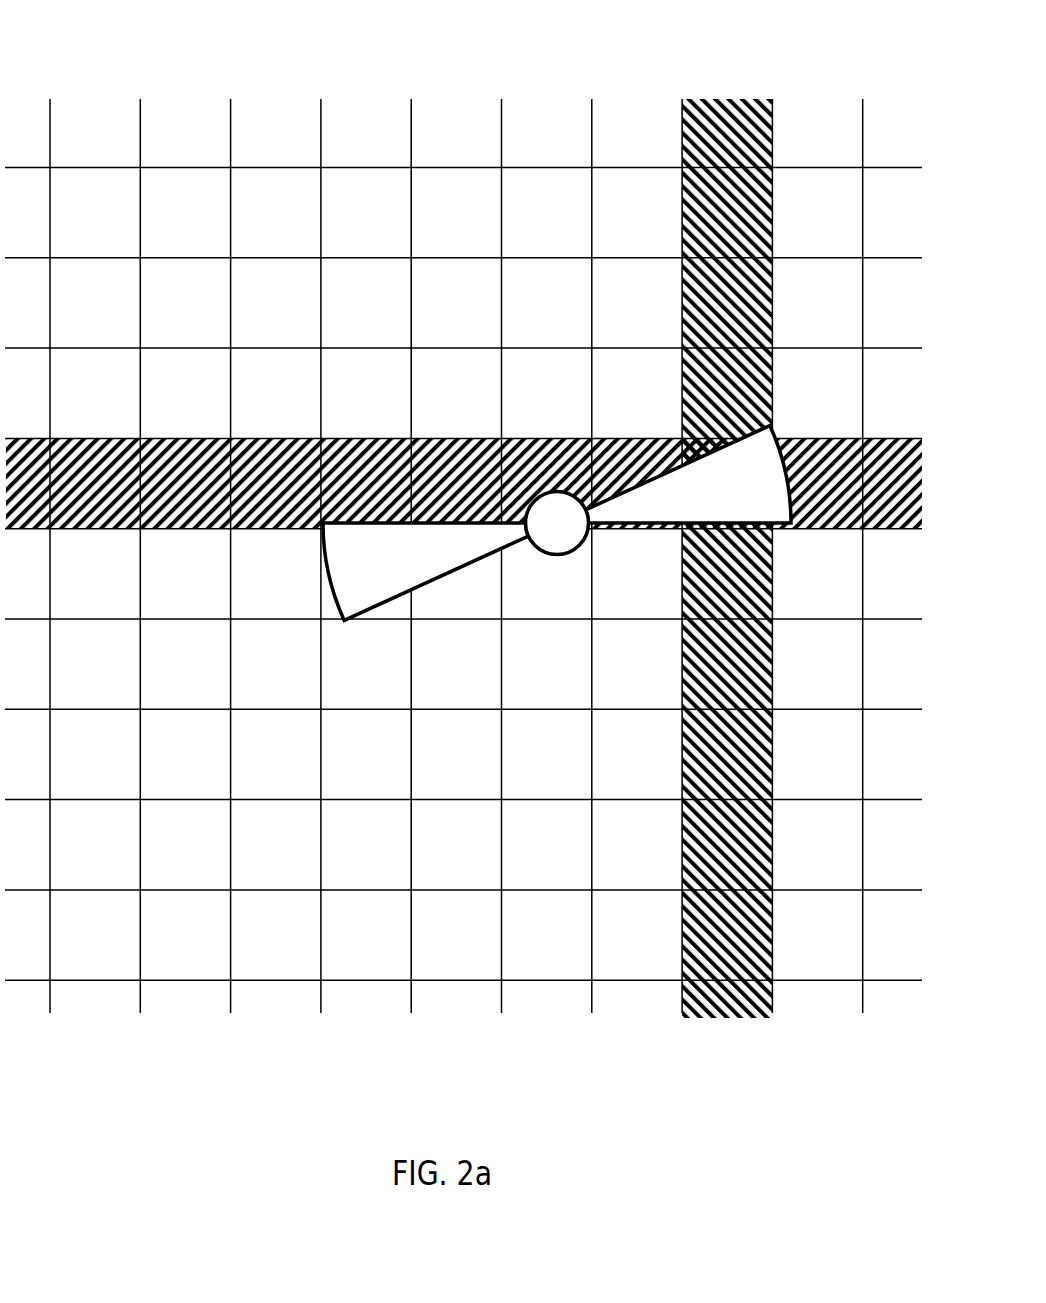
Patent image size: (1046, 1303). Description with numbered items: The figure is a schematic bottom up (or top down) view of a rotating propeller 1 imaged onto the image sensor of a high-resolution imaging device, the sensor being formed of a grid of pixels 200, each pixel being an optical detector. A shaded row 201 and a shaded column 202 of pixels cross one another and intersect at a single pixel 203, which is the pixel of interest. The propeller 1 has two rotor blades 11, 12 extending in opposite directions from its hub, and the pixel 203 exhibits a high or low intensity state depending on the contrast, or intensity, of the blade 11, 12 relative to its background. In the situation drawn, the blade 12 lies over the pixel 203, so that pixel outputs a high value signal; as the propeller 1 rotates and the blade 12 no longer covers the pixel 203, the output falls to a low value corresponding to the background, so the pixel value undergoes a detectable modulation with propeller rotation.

The grid of pixels 200 is at (208, 69).
The shaded row 201 is at (902, 528).
The column 202 is at (712, 100).
The pixel 203 is at (695, 450).
The propeller 1 is at (572, 559).
The rotor blade 11 is at (387, 602).
The rotor blade 12 is at (673, 512).